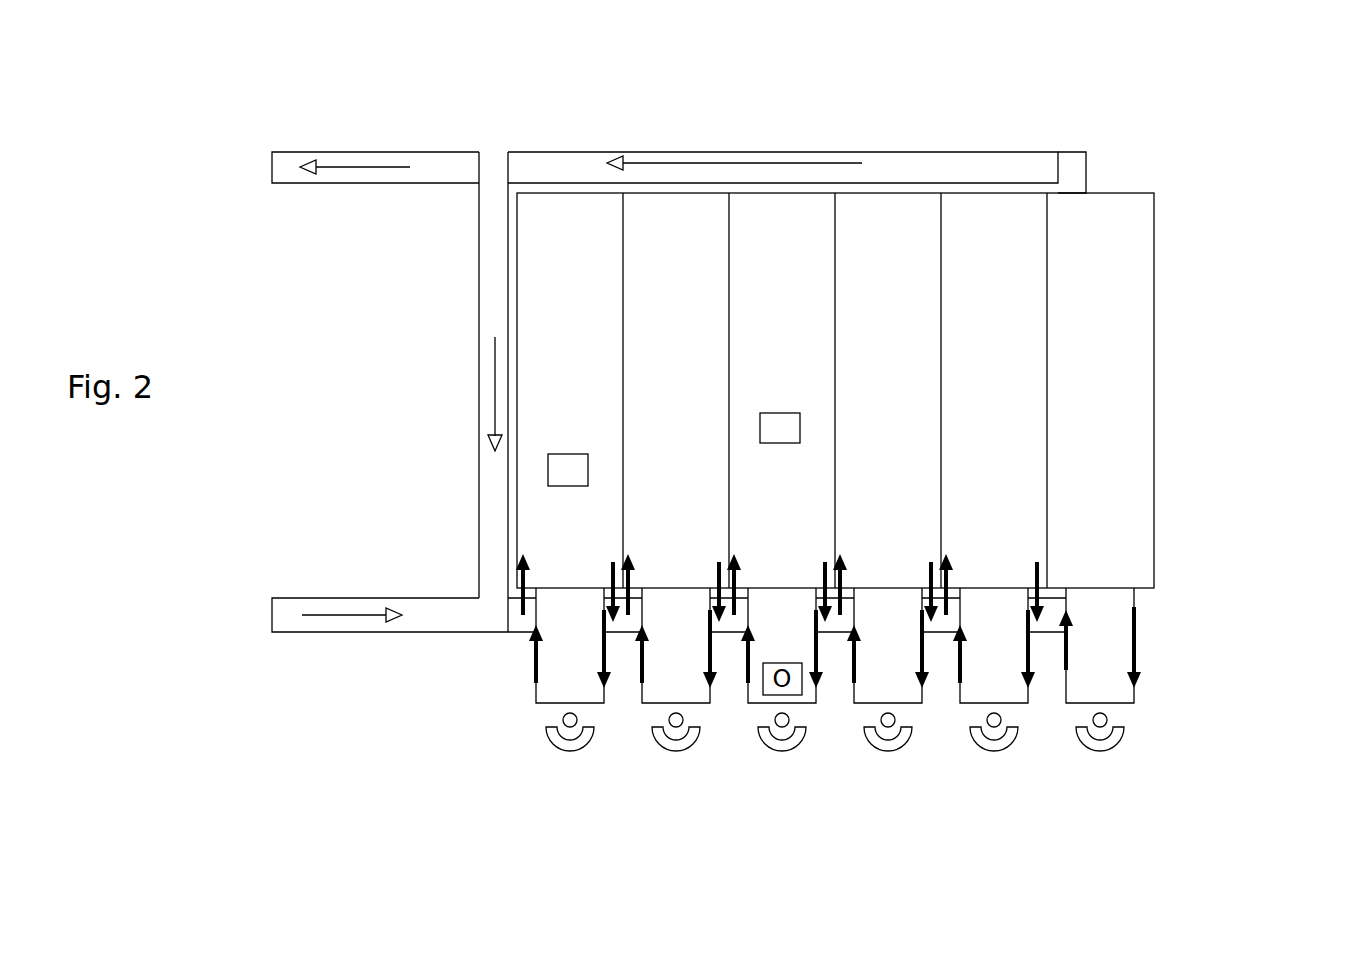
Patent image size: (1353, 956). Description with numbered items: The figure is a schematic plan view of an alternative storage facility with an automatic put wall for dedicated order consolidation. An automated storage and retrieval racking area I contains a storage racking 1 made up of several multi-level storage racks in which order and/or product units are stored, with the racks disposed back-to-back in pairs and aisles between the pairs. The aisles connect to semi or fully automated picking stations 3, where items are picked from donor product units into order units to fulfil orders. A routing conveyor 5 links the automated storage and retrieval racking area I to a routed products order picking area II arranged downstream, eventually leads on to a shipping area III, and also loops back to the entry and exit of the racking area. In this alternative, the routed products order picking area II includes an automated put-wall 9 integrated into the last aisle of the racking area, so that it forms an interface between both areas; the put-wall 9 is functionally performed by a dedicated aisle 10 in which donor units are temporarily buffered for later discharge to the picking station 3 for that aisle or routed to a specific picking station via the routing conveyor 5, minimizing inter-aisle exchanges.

The storage racking 1 is at (660, 278).
The picking station 3 is at (866, 745).
The routing conveyor 5 is at (1019, 164).
The automated put-wall 9 is at (1135, 398).
The dedicated aisle 10 is at (1136, 742).
The automated storage and retrieval racking area I is at (820, 138).
The routed products order picking area II is at (1177, 256).
The shipping area III is at (232, 153).